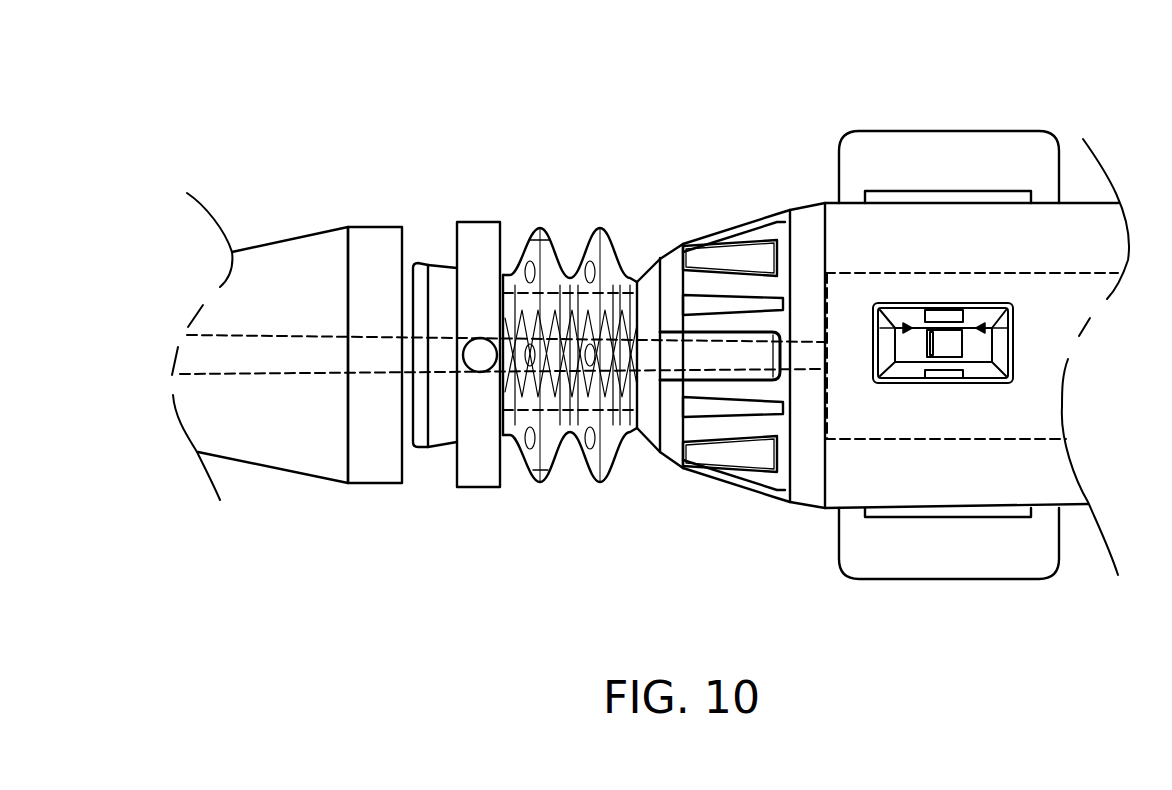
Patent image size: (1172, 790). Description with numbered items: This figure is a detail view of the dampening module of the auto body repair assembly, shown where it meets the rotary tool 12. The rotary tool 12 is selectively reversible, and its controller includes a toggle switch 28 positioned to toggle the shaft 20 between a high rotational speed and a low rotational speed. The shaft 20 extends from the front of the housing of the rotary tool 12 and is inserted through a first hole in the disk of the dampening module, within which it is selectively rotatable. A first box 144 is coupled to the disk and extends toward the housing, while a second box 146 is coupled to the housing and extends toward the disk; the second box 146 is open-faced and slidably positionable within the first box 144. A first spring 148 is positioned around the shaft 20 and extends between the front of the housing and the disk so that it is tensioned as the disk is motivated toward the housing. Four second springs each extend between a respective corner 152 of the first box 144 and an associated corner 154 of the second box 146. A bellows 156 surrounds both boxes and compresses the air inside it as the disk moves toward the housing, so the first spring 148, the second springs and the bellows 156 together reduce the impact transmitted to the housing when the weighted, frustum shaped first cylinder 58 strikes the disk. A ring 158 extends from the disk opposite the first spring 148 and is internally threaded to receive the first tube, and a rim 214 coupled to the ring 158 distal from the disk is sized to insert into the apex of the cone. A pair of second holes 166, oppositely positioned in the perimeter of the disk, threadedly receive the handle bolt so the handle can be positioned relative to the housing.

The rotary tool 12 is at (935, 219).
The shaft 20 is at (645, 362).
The toggle switch 28 is at (988, 318).
The first cylinder 58 is at (368, 227).
The first box 144 is at (558, 223).
The second box 146 is at (618, 237).
The first spring 148 is at (660, 256).
The corner 152 is at (548, 473).
The corner 154 is at (630, 440).
The bellows 156 is at (602, 227).
The ring 158 is at (437, 262).
The second hole 166 is at (480, 373).
The rim 214 is at (418, 262).